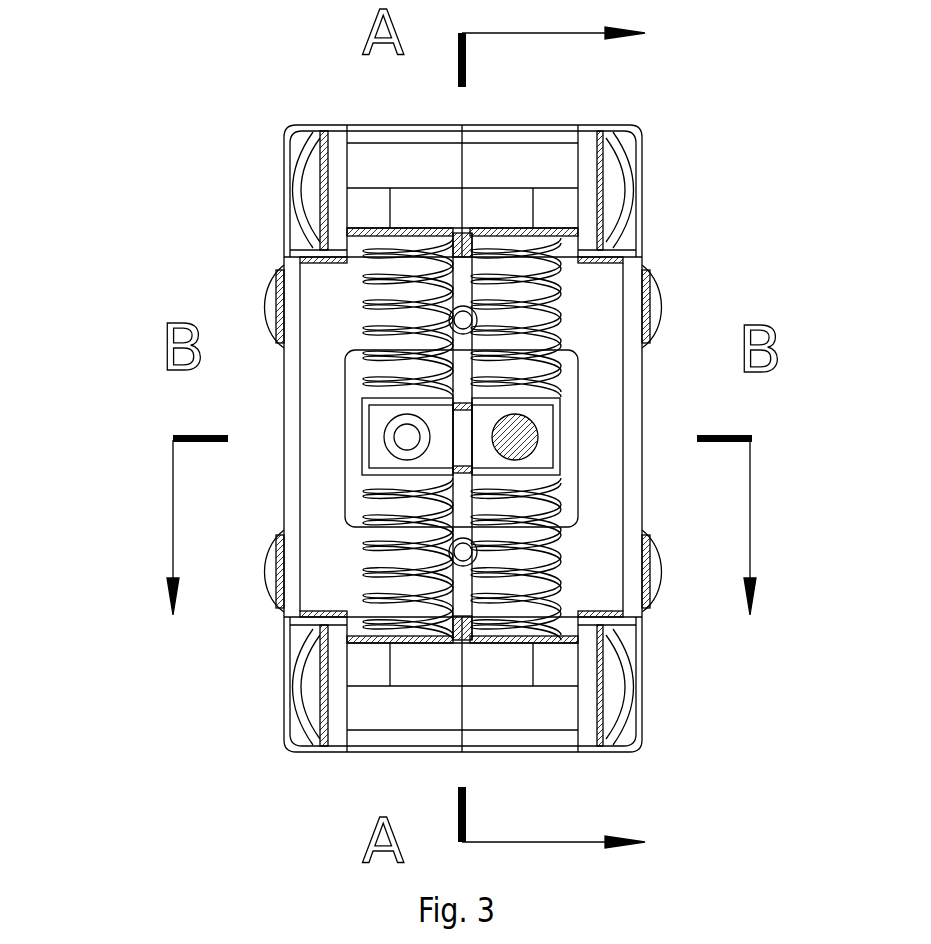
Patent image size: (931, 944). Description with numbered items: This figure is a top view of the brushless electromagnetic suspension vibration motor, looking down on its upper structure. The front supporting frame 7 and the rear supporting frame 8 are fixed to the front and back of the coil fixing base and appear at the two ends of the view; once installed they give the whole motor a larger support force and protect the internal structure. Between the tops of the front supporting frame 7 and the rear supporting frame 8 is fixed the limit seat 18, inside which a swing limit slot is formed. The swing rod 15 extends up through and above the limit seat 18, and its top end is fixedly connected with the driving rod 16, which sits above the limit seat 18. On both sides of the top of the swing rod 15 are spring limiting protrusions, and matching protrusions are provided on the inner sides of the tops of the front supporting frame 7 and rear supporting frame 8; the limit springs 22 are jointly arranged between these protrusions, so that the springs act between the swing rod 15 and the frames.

The front supporting frame 7 is at (542, 164).
The rear supporting frame 8 is at (364, 163).
The limit spring 22 is at (363, 292).
The limit seat 18 is at (613, 290).
The driving rod 16 is at (383, 465).
The swing rod 15 is at (564, 487).